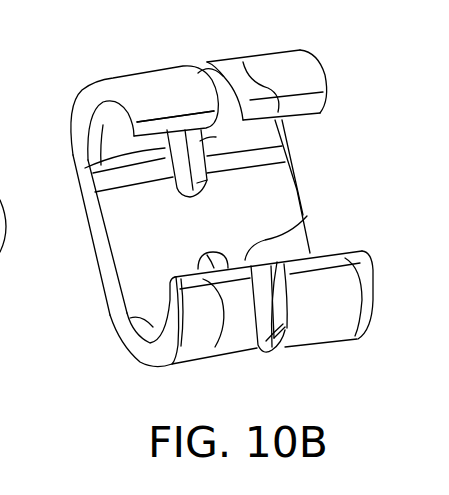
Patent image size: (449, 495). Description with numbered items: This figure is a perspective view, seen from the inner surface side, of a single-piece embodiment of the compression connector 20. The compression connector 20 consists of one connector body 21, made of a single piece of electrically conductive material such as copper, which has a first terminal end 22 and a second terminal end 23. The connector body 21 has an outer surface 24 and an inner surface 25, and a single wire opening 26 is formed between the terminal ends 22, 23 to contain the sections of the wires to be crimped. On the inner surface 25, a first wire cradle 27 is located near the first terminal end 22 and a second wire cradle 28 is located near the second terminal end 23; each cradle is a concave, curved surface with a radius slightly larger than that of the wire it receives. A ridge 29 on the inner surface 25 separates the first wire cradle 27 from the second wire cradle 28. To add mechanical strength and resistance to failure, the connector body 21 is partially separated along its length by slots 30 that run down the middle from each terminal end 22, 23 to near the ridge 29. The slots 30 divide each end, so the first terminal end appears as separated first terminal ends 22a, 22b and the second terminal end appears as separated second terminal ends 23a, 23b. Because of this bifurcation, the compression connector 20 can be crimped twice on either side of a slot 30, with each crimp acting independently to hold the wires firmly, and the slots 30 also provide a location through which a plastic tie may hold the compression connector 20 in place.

The compression connector 20 is at (377, 355).
The connector body 21 is at (100, 224).
The first terminal end 22 is at (187, 120).
The first terminal end 22a is at (98, 101).
The first terminal end 22b is at (327, 113).
The second terminal end 23 is at (328, 262).
The second terminal end 23a is at (215, 347).
The second terminal end 23b is at (360, 340).
The outer surface 24 is at (172, 107).
The inner surface 25 is at (240, 231).
The wire opening 26 is at (343, 242).
The first wire cradle 27 is at (100, 166).
The second wire cradle 28 is at (130, 320).
The ridge 29 is at (112, 243).
The slots 30 is at (210, 67).